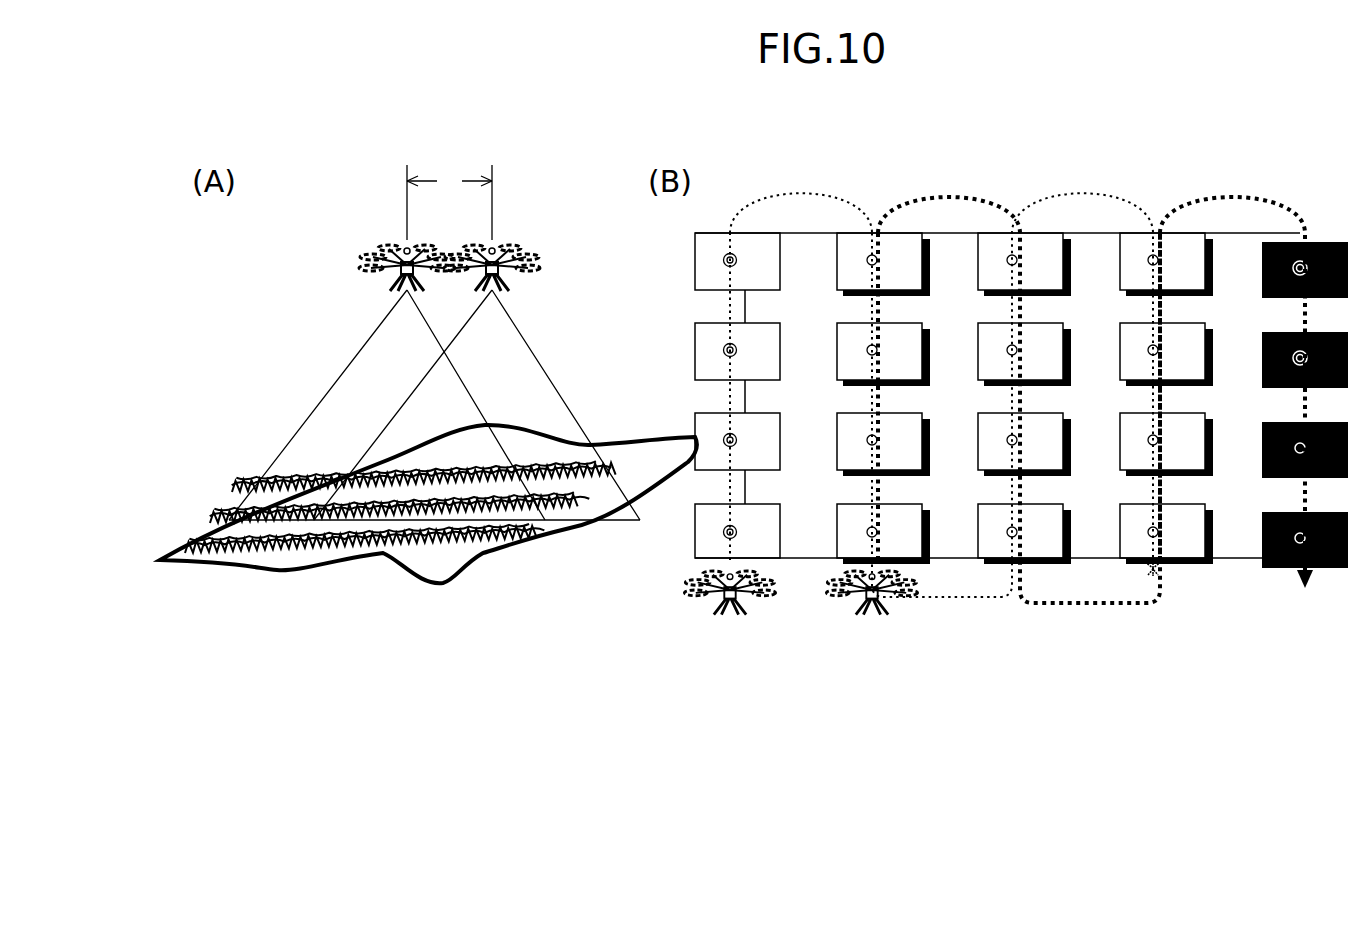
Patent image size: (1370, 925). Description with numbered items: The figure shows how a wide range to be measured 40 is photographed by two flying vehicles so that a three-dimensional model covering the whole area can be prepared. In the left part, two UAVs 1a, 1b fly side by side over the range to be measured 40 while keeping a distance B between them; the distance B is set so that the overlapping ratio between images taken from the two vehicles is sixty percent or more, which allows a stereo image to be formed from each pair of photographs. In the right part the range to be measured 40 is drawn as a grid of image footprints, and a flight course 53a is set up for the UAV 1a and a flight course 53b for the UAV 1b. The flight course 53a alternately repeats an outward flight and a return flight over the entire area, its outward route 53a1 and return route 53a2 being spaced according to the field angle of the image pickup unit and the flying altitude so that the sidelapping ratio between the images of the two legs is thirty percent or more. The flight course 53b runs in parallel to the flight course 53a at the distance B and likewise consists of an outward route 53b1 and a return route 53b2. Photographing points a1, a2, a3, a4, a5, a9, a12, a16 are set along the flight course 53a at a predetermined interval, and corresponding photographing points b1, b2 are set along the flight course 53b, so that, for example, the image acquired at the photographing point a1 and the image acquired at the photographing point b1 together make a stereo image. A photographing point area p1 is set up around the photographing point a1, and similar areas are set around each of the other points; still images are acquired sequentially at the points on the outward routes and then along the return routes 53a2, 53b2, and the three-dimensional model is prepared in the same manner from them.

The UAV 1a is at (353, 262).
The UAV 1b is at (522, 246).
The distance B is at (449, 202).
The range to be measured 40 is at (522, 425).
The flight course 53a is at (881, 361).
The flight course 53b is at (1095, 365).
The outward route 53a1 is at (730, 305).
The return route 53a2 is at (872, 330).
The outward route 53b1 is at (880, 312).
The return route 53b2 is at (1028, 312).
The photographing point a1 is at (737, 536).
The photographing point a2 is at (723, 438).
The photographing point a3 is at (723, 350).
The photographing point a4 is at (722, 263).
The photographing point a5 is at (874, 256).
The photographing point a9 is at (1017, 536).
The photographing point a12 is at (1013, 256).
The photographing point a16 is at (1158, 535).
The photographing point area p1 is at (723, 536).
The photographing point b1 is at (877, 535).
The photographing point b2 is at (878, 440).